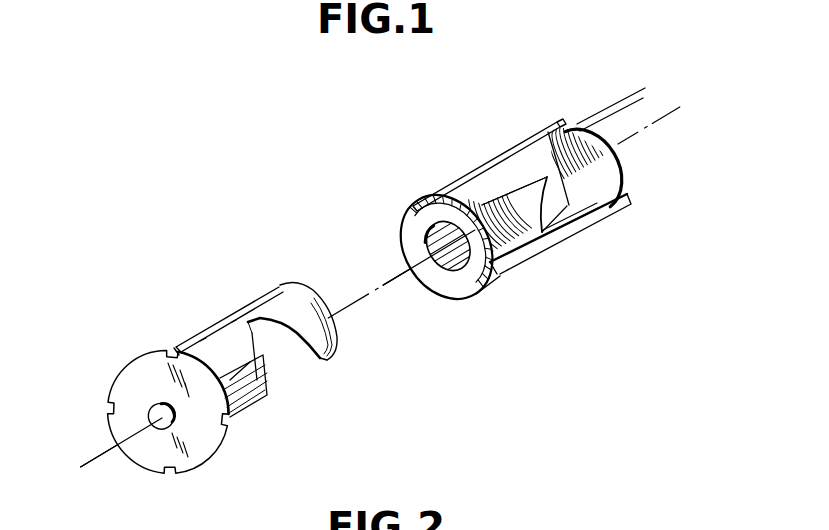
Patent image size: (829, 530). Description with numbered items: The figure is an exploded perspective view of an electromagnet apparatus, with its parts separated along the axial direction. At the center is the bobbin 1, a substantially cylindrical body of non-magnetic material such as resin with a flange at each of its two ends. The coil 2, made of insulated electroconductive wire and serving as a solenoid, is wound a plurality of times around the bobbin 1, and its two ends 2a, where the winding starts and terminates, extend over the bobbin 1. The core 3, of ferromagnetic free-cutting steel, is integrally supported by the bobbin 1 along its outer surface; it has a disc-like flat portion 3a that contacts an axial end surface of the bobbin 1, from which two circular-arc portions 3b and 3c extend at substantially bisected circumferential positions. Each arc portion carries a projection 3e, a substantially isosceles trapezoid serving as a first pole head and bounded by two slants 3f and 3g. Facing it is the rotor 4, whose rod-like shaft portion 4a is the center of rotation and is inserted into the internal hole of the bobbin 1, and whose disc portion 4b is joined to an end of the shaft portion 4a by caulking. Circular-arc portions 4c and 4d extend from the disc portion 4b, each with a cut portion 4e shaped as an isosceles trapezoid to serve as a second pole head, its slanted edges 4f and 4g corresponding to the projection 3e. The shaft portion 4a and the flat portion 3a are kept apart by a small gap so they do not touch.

The bobbin 1 is at (447, 281).
The coil 2 is at (513, 248).
The ends 2a is at (622, 95).
The core 3 is at (543, 245).
The disc-like flat portion 3a is at (625, 165).
The circular-arc portion 3b is at (609, 207).
The circular-arc portion 3c is at (502, 158).
The projection 3e is at (562, 193).
The slant 3f is at (479, 204).
The slant 3g is at (566, 178).
The rotor 4 is at (204, 346).
The shaft portion 4a is at (281, 366).
The disc portion 4b is at (202, 428).
The circular-arc portion 4c is at (293, 310).
The circular-arc portion 4d is at (112, 420).
The cut portion 4e is at (262, 296).
The slant 4f is at (273, 363).
The slant 4g is at (308, 353).